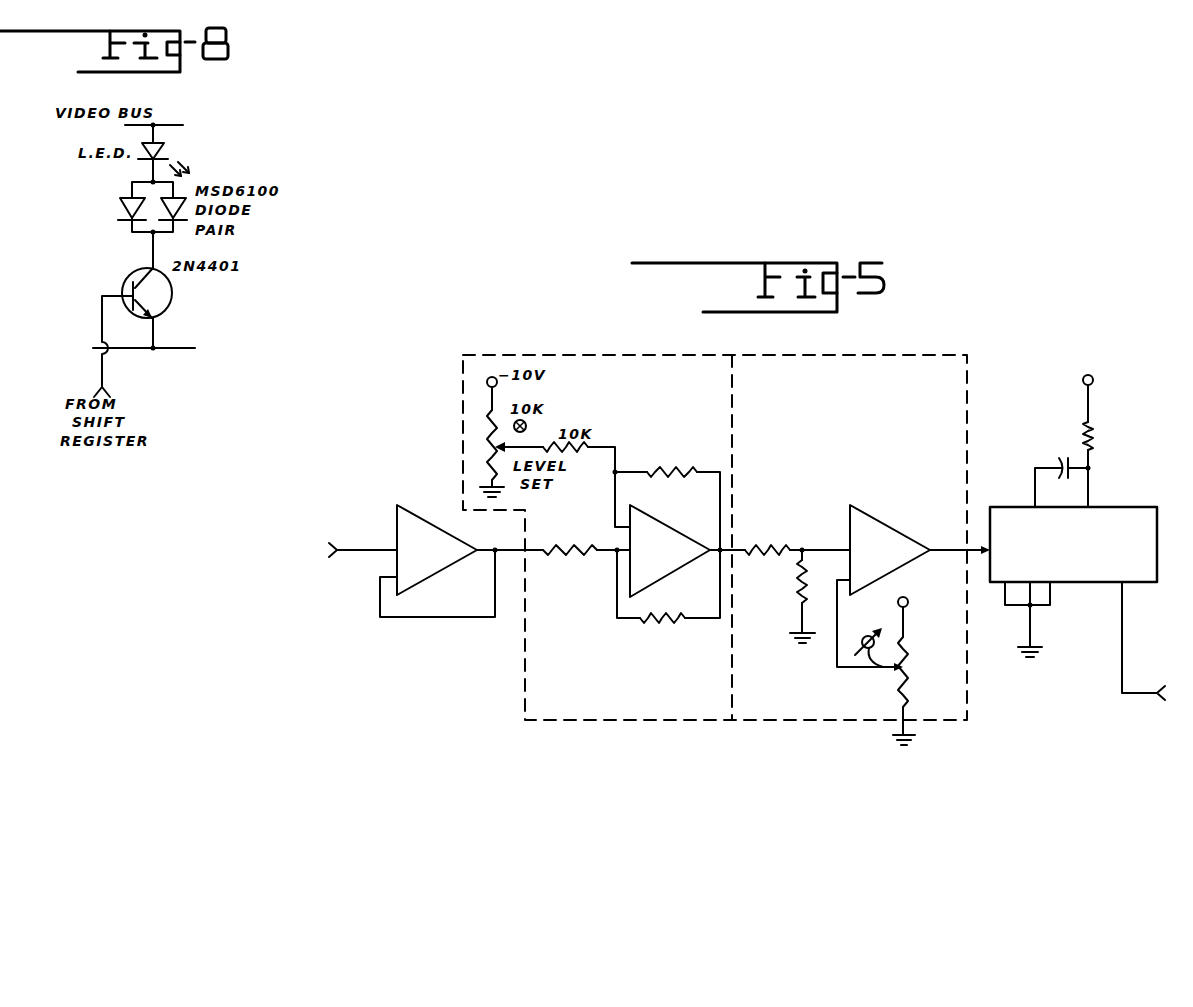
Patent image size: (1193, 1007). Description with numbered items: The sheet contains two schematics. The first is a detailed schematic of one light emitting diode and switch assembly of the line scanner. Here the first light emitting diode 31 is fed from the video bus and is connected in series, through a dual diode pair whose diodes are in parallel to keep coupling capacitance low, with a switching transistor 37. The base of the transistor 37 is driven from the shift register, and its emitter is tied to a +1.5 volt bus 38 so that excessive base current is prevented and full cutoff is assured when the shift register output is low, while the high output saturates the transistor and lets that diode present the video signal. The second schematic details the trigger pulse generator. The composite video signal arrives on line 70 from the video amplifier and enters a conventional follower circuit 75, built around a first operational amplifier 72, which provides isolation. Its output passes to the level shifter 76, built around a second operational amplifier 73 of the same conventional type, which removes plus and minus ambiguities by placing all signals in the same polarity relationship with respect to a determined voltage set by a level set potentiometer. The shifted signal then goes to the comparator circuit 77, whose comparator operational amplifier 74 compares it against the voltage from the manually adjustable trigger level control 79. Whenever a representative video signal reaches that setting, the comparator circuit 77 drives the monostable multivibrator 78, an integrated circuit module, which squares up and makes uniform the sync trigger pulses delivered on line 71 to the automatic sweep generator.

In FIG. 8, the first light emitting diode 31 is at (164, 155).
In FIG. 8, the transistor 37 is at (172, 292).
In FIG. 8, the +1.5 volt bus 38 is at (183, 352).
In FIG. 5, the line 70 is at (366, 549).
In FIG. 5, the line 71 is at (1122, 652).
In FIG. 5, the operational amplifier 72 is at (443, 572).
In FIG. 5, the operational amplifier 73 is at (665, 523).
In FIG. 5, the operational amplifier 74 is at (895, 509).
In FIG. 5, the follower circuit 75 is at (391, 599).
In FIG. 5, the level shifter 76 is at (644, 581).
In FIG. 5, the comparator circuit 77 is at (867, 576).
In FIG. 5, the monostable multivibrator 78 is at (1157, 525).
In FIG. 5, the manually adjustable trigger level control 79 is at (904, 670).